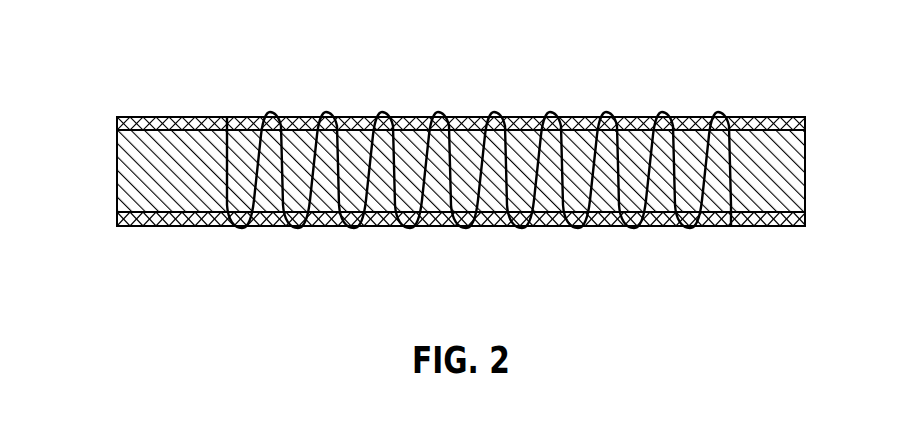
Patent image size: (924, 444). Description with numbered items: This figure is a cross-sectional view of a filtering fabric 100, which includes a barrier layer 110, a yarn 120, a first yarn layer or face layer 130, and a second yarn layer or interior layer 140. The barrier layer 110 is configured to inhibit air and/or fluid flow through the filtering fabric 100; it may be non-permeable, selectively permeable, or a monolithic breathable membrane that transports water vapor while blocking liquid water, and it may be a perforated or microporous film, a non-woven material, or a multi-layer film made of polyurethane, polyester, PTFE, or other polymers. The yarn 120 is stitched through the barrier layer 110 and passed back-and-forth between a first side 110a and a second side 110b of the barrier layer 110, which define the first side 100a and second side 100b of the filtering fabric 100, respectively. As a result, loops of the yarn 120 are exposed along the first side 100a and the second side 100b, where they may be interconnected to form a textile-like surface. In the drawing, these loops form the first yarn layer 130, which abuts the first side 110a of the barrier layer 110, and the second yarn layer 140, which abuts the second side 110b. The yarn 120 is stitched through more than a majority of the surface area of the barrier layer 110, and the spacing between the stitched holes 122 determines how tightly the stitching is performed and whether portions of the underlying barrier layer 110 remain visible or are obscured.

The filtering fabric 100 is at (112, 47).
The first side of filtering fabric 100a is at (748, 118).
The second side of filtering fabric 100b is at (766, 227).
The barrier layer 110 is at (117, 172).
The first side of barrier layer 110a is at (498, 120).
The second side of barrier layer 110b is at (501, 226).
The yarn 120 is at (479, 174).
The stitched holes 122 is at (458, 120).
The first yarn layer 130 is at (118, 118).
The second yarn layer 140 is at (117, 222).